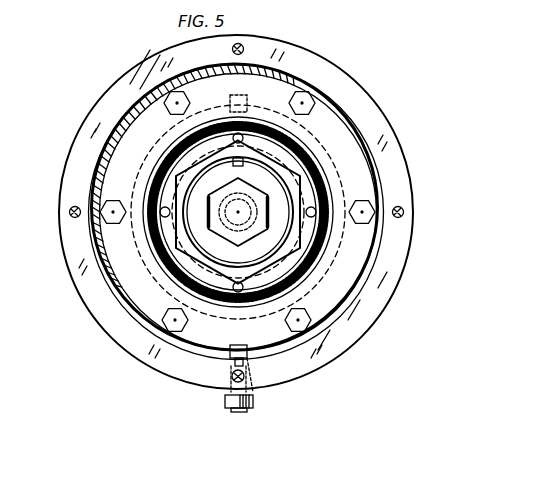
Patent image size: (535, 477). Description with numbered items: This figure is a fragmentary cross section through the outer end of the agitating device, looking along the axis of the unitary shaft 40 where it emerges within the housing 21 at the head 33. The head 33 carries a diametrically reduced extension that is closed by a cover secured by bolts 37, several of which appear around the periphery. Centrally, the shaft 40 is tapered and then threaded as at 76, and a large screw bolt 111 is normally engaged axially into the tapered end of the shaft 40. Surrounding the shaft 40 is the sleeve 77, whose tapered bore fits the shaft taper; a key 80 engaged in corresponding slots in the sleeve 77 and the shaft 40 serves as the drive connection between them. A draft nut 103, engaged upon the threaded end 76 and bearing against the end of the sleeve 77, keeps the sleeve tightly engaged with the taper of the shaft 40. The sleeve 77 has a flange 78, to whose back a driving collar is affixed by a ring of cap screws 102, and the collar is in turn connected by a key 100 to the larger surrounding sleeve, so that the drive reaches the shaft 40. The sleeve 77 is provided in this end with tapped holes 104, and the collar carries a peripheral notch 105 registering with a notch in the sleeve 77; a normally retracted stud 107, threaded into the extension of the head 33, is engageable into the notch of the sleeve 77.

The housing 21 is at (432, 243).
The head 33 is at (328, 80).
The bolts 37 is at (245, 49).
The shaft 40 is at (210, 226).
The threaded end 76 is at (170, 228).
The sleeve 77 is at (327, 120).
The flange 78 is at (357, 157).
The key 80 is at (236, 165).
The key 100 is at (236, 92).
The cap screws 102 is at (110, 203).
The draft nut 103 is at (180, 177).
The tapped holes 104 is at (160, 220).
The peripheral notch 105 is at (252, 372).
The stud 107 is at (236, 412).
The screw bolt 111 is at (216, 232).